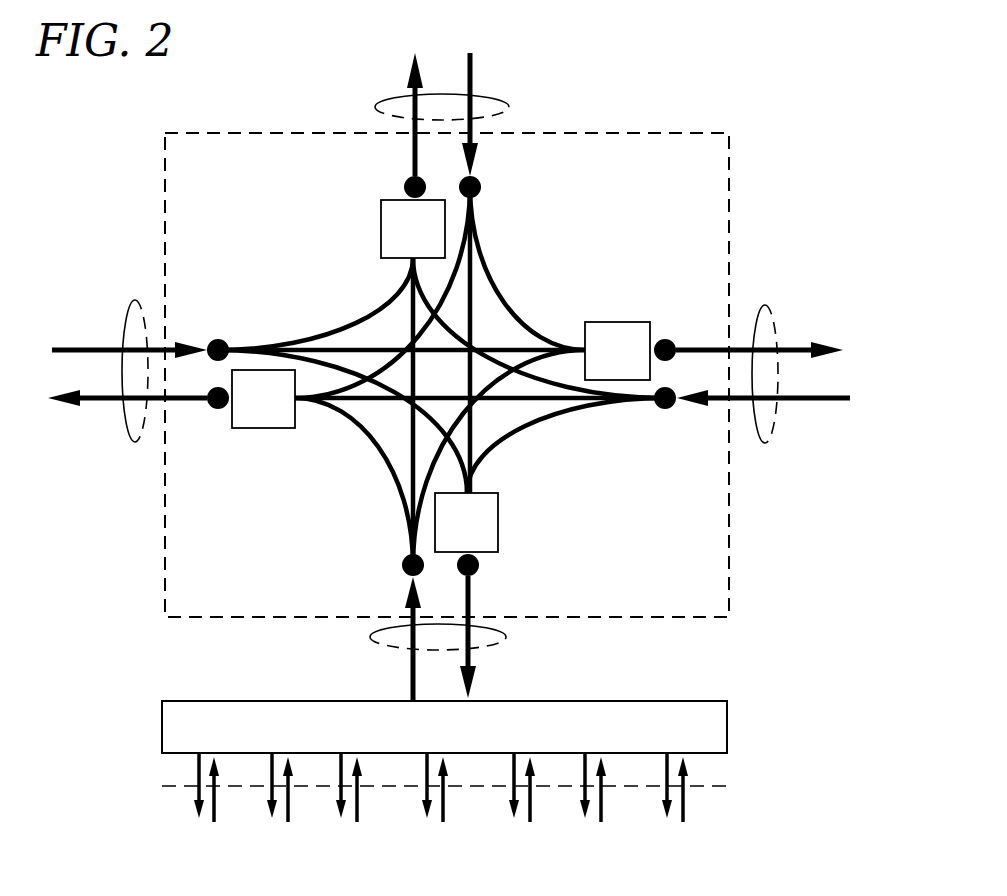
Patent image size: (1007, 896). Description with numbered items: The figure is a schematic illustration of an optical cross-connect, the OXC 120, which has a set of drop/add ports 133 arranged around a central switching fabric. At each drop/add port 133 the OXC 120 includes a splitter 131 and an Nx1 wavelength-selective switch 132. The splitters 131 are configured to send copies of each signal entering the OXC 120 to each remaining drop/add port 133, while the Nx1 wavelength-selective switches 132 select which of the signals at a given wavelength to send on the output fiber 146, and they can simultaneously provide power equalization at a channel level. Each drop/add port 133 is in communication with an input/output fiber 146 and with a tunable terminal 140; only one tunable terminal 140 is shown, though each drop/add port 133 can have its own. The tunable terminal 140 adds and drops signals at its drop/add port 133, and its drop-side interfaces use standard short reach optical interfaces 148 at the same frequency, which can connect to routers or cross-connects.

The optical cross-connect 120 is at (672, 103).
The splitter 131 is at (482, 186).
The Nx1 wavelength-selective switch 132 is at (381, 215).
The drop/add port 133 is at (510, 105).
The tunable terminal 140 is at (727, 731).
The input/output fiber 146 is at (820, 345).
The short reach optical interface 148 is at (172, 786).